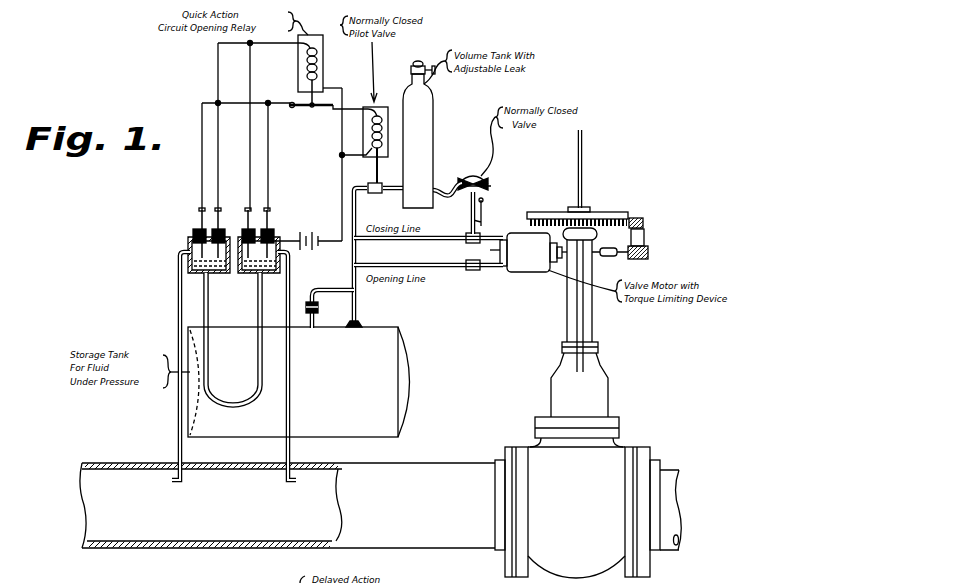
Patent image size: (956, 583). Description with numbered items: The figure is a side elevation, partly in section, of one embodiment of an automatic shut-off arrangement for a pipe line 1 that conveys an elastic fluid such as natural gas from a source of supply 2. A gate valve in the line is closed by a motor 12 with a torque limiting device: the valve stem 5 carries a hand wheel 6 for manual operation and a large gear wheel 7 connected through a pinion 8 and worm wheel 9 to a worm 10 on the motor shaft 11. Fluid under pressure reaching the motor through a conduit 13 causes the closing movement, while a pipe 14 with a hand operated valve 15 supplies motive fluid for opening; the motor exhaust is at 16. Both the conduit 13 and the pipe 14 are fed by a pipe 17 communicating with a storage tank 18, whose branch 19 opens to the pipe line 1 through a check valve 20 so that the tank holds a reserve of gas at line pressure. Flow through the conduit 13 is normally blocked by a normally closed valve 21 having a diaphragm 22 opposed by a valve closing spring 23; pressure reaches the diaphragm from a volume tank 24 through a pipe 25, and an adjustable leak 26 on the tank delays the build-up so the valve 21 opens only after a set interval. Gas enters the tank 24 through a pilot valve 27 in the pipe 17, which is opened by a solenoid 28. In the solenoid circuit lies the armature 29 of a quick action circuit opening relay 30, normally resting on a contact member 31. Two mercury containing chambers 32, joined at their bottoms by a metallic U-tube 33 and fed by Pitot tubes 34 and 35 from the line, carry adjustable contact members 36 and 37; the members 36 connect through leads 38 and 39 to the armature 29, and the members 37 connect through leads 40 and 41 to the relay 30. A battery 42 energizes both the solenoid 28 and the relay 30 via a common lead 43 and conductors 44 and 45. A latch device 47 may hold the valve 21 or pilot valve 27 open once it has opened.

The pipe line 1 is at (100, 521).
The source of supply 2 is at (560, 566).
The valve stem 5 is at (583, 156).
The hand wheel 6 is at (623, 212).
The gear wheel 7 is at (593, 217).
The pinion 8 is at (643, 223).
The worm wheel 9 is at (648, 259).
The worm 10 is at (644, 250).
The motor shaft 11 is at (604, 258).
The motor 12 is at (545, 274).
The conduit 13 is at (428, 246).
The pipe 14 is at (497, 272).
The hand operated valve 15 is at (472, 272).
The exhaust 16 is at (490, 250).
The pipe 17 is at (357, 318).
The storage tank 18 is at (405, 418).
The branch pipe 19 is at (313, 372).
The check valve 20 is at (318, 307).
The normally closed valve 21 is at (470, 207).
The diaphragm 22 is at (462, 180).
The valve closing spring 23 is at (473, 181).
The volume tank 24 is at (433, 112).
The pipe 25 is at (446, 190).
The adjustable leak 26 is at (410, 75).
The pilot valve 27 is at (375, 170).
The solenoid 28 is at (363, 137).
The armature 29 is at (312, 116).
The quick action circuit opening electric relay 30 is at (298, 69).
The contact member 31 is at (333, 111).
The mercury containing chamber 32 is at (186, 257).
The U tube 33 is at (206, 302).
The Pitot tube 34 is at (172, 484).
The Pitot tube 35 is at (290, 484).
The adjustable contact member 36 is at (199, 214).
The adjustable contact member 37 is at (252, 214).
The lead 38 is at (268, 166).
The lead 39 is at (202, 165).
The lead 40 is at (250, 119).
The lead 41 is at (218, 75).
The battery 42 is at (309, 251).
The common lead 43 is at (342, 188).
The conductor 44 is at (342, 156).
The conductor 45 is at (342, 88).
The latch device 47 is at (485, 214).